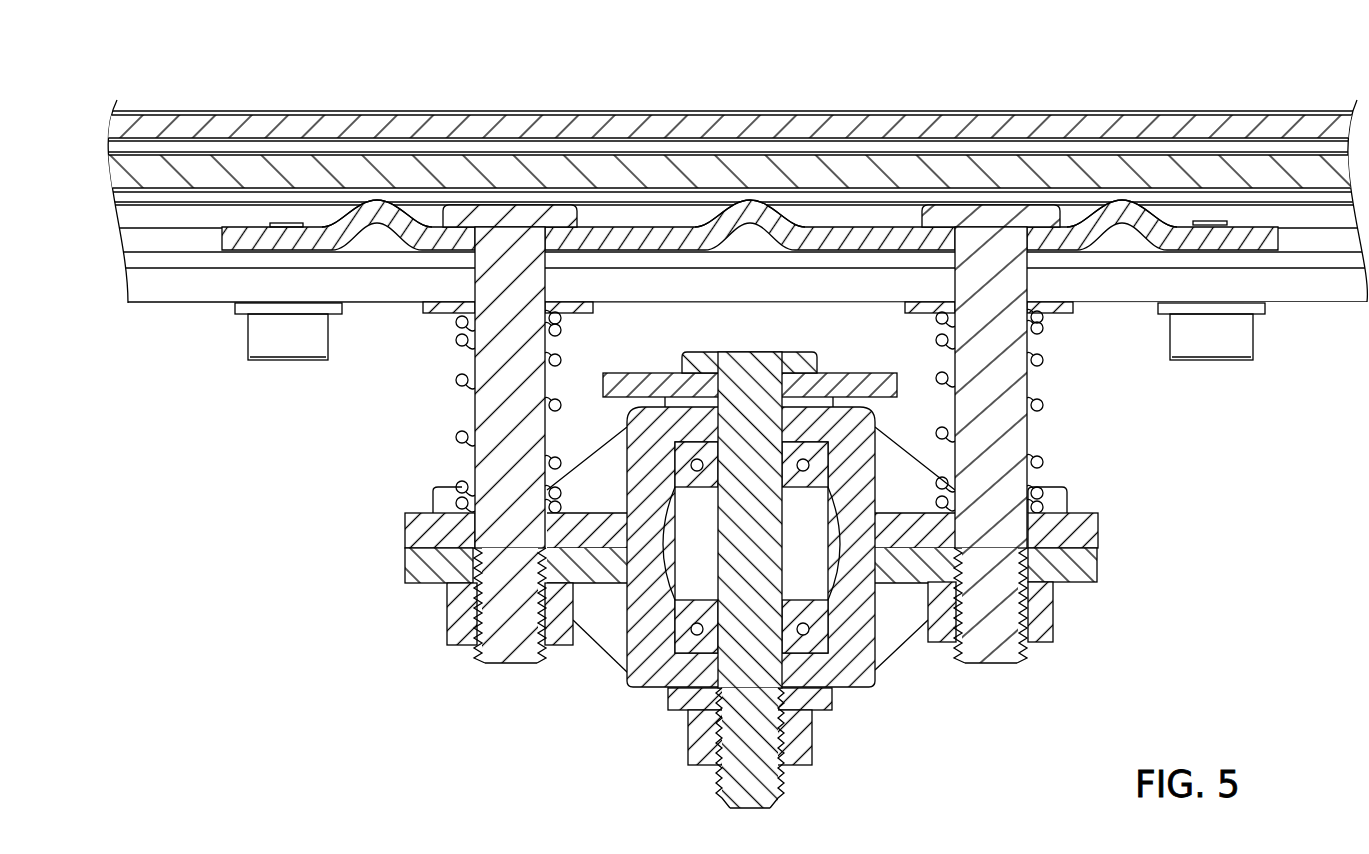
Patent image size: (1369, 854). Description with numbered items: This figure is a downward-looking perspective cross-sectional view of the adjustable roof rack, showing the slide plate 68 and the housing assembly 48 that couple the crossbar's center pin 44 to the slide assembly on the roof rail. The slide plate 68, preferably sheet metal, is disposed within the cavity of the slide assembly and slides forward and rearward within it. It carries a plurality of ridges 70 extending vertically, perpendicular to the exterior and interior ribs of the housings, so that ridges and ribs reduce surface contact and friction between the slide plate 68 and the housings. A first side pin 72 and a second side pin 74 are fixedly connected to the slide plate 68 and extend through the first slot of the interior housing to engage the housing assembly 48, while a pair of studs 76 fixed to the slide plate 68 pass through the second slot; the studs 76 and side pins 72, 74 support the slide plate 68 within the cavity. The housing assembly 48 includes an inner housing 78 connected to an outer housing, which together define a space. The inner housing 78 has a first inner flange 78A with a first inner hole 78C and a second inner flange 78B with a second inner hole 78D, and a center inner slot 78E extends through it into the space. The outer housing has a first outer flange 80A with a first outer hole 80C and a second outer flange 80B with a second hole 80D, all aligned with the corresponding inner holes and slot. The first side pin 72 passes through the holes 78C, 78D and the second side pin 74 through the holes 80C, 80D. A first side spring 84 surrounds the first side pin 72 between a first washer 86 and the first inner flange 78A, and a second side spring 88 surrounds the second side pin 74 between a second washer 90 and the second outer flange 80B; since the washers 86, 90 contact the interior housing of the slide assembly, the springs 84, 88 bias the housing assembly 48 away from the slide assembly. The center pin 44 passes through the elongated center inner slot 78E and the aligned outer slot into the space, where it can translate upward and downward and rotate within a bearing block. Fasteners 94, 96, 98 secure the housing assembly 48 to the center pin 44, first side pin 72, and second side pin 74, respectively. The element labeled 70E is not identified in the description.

The center pin 44 is at (748, 808).
The housing assembly 48 is at (642, 782).
The slide plate 68 is at (653, 227).
The ridges 70 is at (382, 203).
The pivot shaft 70E is at (780, 422).
The first side pin 72 is at (497, 665).
The second side pin 74 is at (1003, 665).
The studs 76 is at (258, 342).
The inner housing 78 is at (648, 687).
The first inner flange 78A is at (405, 574).
The second inner flange 78B is at (1098, 574).
The first inner hole 78C is at (478, 568).
The second inner hole 78D is at (1020, 572).
The center inner slot 78E is at (773, 617).
The first outer flange 80A is at (405, 525).
The second outer flange 80B is at (1098, 524).
The first outer hole 80C is at (477, 540).
The second hole 80D is at (1025, 538).
The first side spring 84 is at (458, 387).
The first washer 86 is at (428, 316).
The second side spring 88 is at (1043, 362).
The second washer 90 is at (1050, 303).
The fastener 94 is at (798, 765).
The fastener 96 is at (448, 622).
The fastener 98 is at (1057, 622).